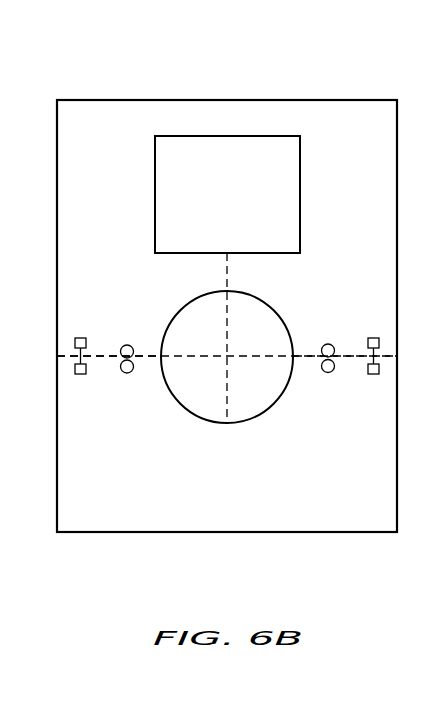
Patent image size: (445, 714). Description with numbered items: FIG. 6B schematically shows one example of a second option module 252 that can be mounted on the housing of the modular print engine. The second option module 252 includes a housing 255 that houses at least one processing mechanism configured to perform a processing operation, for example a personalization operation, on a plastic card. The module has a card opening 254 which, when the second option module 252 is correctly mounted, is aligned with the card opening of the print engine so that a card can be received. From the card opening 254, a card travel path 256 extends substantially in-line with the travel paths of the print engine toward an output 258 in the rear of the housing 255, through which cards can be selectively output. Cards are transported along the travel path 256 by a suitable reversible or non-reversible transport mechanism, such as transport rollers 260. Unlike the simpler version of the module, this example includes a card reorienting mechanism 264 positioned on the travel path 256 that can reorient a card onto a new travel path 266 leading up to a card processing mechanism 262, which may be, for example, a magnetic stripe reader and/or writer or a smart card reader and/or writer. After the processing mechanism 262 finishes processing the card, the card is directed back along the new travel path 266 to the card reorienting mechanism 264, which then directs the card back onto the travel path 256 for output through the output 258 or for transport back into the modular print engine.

The second option module 252 is at (350, 532).
The housing 255 is at (228, 100).
The card processing mechanism 262 is at (300, 186).
The card reorienting mechanism 264 is at (201, 294).
The new travel path 266 is at (230, 270).
The card travel path 256 is at (149, 352).
The card opening 254 is at (58, 356).
The output 258 is at (396, 355).
The transport rollers 260 is at (127, 373).